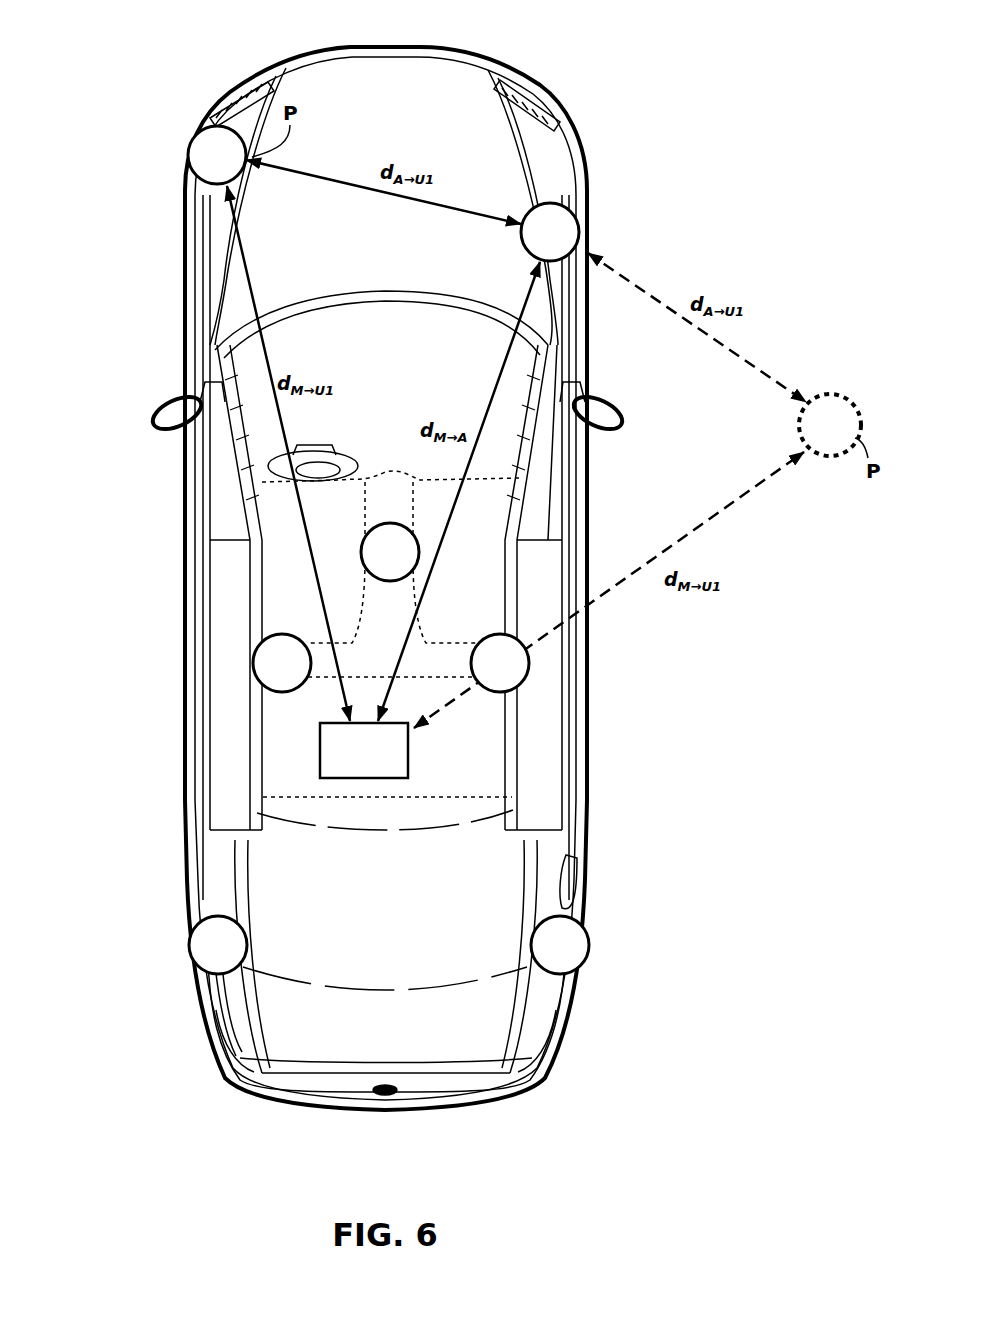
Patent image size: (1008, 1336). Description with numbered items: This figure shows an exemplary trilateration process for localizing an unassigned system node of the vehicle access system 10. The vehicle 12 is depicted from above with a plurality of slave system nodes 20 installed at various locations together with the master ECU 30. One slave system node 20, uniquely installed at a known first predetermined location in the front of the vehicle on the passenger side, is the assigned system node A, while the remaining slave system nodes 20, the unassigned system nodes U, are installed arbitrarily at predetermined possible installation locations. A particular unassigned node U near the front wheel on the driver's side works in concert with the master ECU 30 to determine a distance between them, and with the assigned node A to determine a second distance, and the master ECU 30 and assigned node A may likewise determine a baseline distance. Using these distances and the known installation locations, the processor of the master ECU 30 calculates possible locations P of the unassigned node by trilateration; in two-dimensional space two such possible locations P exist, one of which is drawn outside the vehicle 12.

The vehicle access system 10 is at (90, 80).
The vehicle 12 is at (486, 54).
The slave system node 20 is at (200, 134).
The master ECU 30 is at (410, 763).